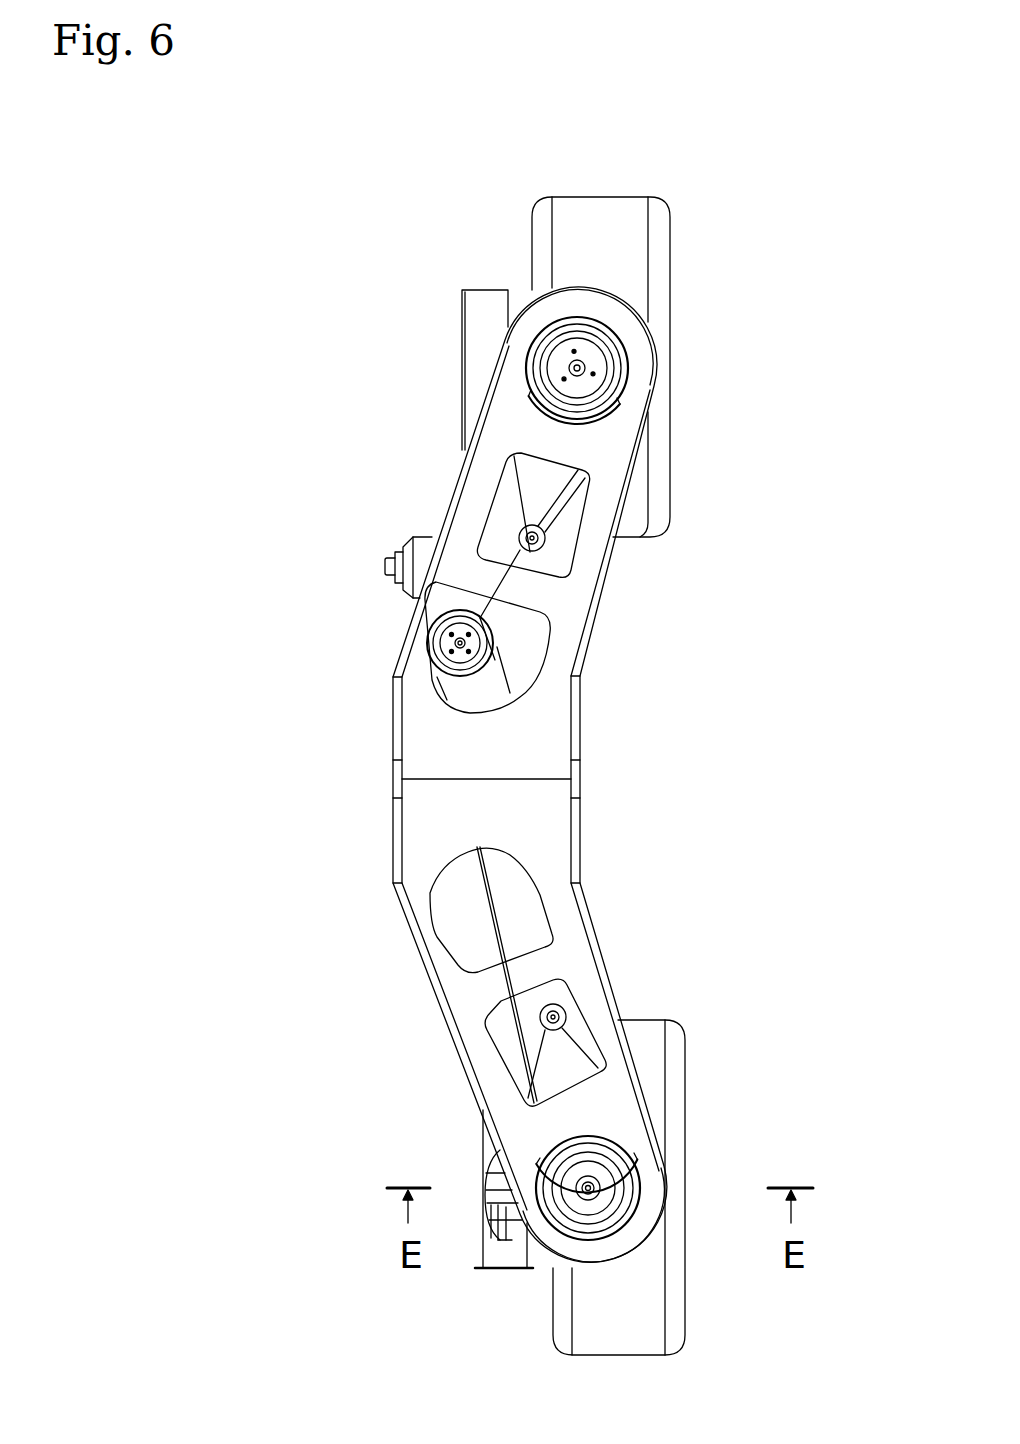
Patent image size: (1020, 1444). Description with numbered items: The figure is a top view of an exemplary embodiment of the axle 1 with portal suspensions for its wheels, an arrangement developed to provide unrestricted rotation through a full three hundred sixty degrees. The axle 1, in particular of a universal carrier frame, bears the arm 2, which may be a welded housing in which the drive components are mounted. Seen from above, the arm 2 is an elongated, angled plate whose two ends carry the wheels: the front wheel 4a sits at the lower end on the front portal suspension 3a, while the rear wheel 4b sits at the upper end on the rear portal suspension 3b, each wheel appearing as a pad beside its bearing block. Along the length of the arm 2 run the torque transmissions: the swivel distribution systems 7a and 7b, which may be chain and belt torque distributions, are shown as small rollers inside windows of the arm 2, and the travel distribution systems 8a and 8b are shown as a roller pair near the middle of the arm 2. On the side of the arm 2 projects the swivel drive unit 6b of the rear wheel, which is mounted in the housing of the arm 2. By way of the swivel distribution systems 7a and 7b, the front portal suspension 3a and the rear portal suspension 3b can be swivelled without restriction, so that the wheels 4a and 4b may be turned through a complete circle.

The axle 1 is at (503, 110).
The arm 2 is at (392, 828).
The front portal suspension 3a is at (480, 1162).
The rear portal suspension 3b is at (458, 318).
The front wheel 4a is at (685, 1047).
The rear wheel 4b is at (660, 200).
The swivel drive unit 6b is at (402, 542).
The swivel distribution system 7a is at (587, 1017).
The swivel distribution system 7b is at (581, 498).
The travel distribution system 8a is at (505, 672).
The travel distribution system 8b is at (505, 630).